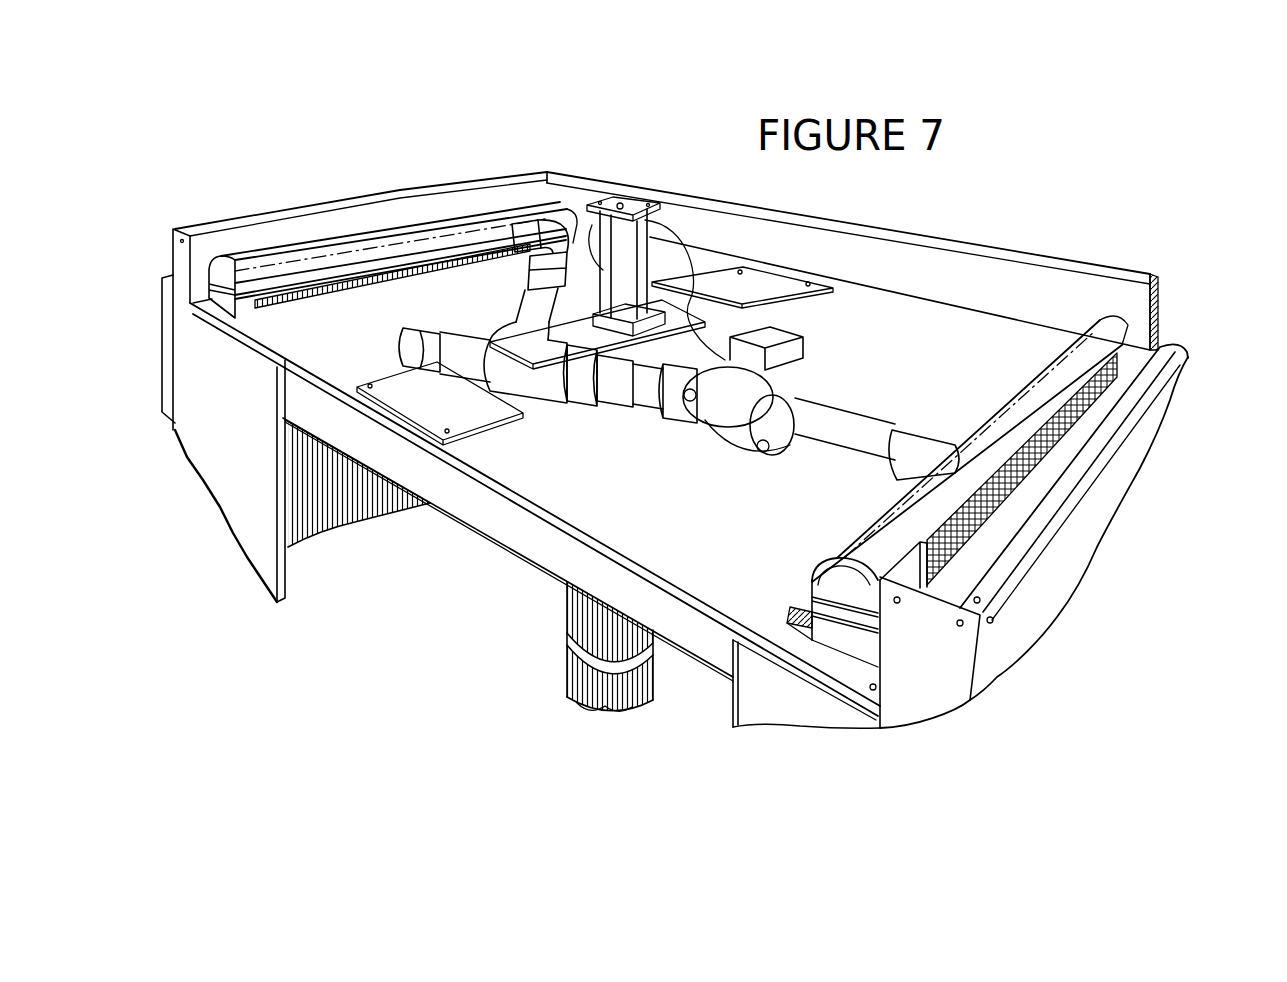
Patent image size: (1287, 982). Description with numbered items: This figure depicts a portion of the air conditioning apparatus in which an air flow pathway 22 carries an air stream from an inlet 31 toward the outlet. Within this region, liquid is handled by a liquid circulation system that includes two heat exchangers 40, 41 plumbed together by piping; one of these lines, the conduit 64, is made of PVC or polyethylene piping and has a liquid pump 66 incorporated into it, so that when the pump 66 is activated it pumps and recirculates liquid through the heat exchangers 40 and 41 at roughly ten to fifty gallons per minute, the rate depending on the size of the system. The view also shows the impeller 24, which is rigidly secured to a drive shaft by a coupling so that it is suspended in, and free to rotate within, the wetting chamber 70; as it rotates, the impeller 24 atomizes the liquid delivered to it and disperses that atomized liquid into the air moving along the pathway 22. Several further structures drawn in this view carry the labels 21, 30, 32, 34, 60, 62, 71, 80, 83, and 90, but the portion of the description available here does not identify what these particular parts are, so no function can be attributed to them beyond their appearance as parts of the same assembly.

The back wall 21 is at (996, 242).
The air flow pathway 22 is at (531, 619).
The impeller 24 is at (568, 662).
The right back wall panel 30 is at (883, 230).
The inlet 31 is at (175, 341).
The left back wall panel 32 is at (347, 203).
The right side wall 34 is at (1180, 358).
The heat exchanger 40 is at (323, 506).
The heat exchanger 41 is at (844, 618).
The left spray bar 60 is at (477, 222).
The right spray bar 62 is at (1040, 397).
The liquid line or conduit 64 is at (862, 416).
The liquid pump 66 is at (800, 373).
The wetting chamber 70 is at (455, 553).
The floor 71 is at (1020, 343).
The collar 80 is at (636, 665).
The foot 83 is at (590, 700).
The actuator post 90 is at (660, 218).